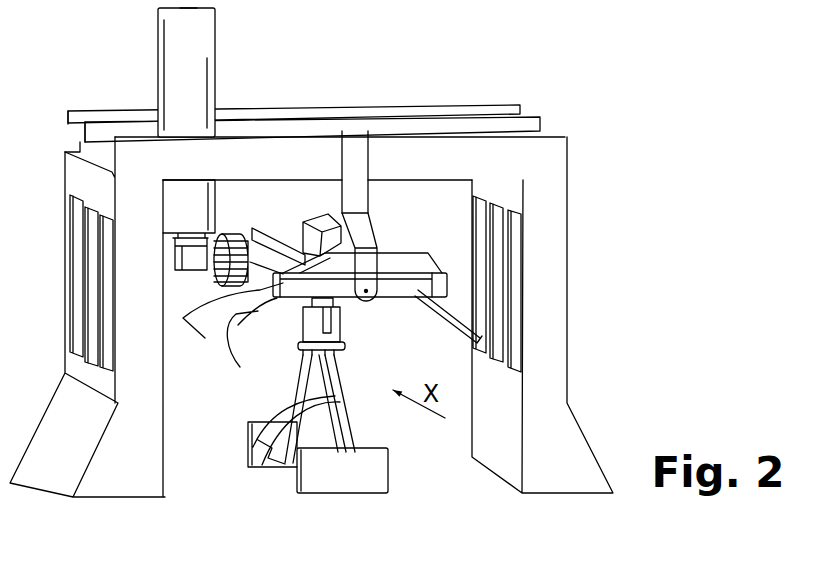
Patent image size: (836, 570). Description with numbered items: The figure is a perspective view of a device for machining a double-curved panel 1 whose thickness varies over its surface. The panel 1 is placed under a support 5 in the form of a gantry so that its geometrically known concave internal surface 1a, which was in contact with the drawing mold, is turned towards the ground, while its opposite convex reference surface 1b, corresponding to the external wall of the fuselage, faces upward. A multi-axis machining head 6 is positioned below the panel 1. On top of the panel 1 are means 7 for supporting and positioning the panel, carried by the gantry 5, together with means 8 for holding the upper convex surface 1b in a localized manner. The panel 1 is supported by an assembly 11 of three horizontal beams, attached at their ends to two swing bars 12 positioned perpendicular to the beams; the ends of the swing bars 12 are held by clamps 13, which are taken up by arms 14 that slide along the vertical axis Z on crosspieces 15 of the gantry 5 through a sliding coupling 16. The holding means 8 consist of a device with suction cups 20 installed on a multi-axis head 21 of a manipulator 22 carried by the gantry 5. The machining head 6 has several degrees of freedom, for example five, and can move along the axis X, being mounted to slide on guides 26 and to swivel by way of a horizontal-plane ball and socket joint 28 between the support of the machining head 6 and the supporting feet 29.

The panel 1 is at (200, 342).
The concave internal surface 1a is at (431, 318).
The convex surface 1b is at (251, 346).
The support 5 is at (568, 182).
The multi-axis machining head 6 is at (290, 320).
The means for supporting and positioning the panel 7 is at (443, 263).
The means for holding the upper convex surface 8 is at (240, 232).
The assembly of three horizontal beams 11 is at (331, 216).
The swing bars 12 is at (330, 262).
The clamps 13 is at (438, 281).
The arms 14 is at (378, 217).
The crosspieces 15 is at (340, 158).
The sliding coupling 16 is at (357, 156).
The suction cups 20 is at (213, 278).
The multi-axis head 21 is at (173, 278).
The manipulator 22 is at (143, 56).
The guides 26 is at (266, 466).
The ball and socket joint 28 is at (343, 353).
The supporting feet 29 is at (283, 460).